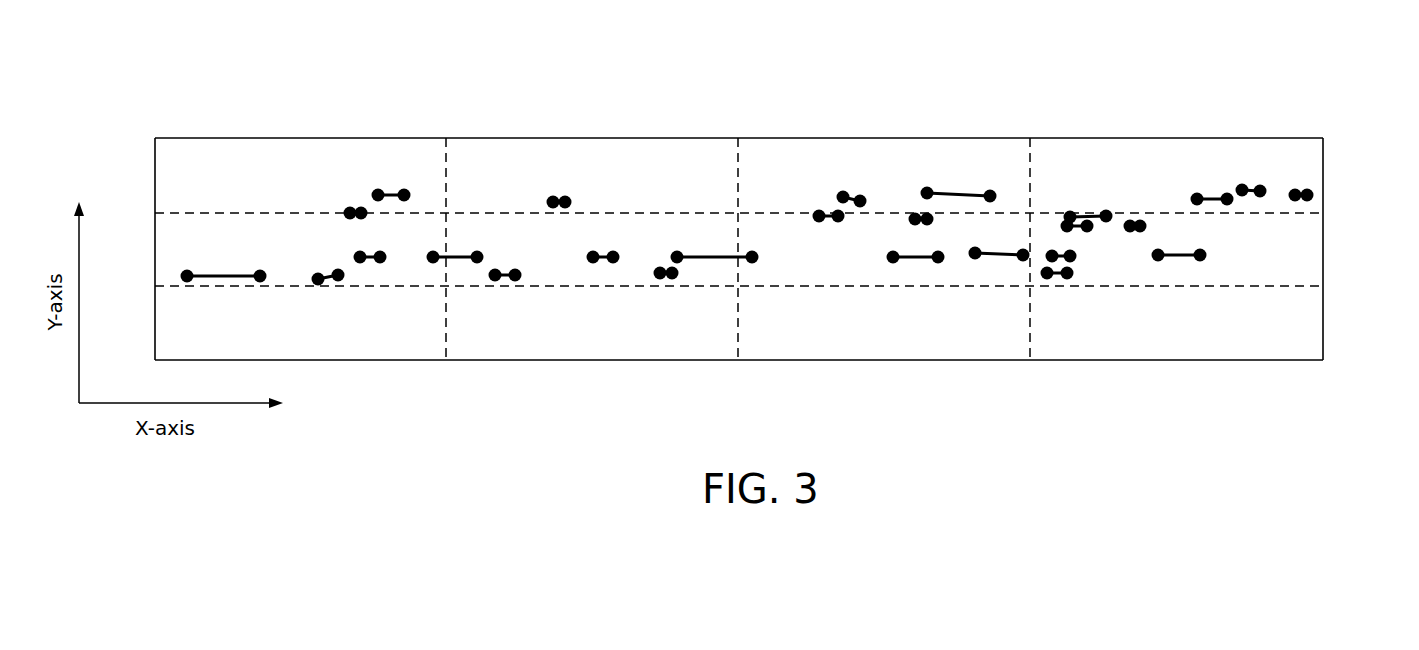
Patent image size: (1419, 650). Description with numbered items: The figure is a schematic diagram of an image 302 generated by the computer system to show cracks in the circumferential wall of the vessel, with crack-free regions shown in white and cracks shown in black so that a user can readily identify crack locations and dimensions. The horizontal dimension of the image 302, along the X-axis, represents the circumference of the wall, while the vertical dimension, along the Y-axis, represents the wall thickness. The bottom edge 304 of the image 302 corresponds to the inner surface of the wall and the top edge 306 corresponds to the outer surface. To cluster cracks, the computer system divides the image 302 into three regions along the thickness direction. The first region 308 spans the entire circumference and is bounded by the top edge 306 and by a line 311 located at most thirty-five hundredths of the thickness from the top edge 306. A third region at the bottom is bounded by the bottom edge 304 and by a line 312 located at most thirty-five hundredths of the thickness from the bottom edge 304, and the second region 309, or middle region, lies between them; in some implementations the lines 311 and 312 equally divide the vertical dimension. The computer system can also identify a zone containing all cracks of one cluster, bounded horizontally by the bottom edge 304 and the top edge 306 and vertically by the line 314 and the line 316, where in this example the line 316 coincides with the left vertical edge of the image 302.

The image 302 is at (690, 234).
The bottom edge 304 is at (1183, 362).
The top edge 306 is at (1170, 138).
The first region 308 is at (392, 172).
The second region 309 is at (1245, 287).
The line 311 is at (630, 213).
The line 312 is at (592, 287).
The line 314 is at (446, 187).
The line 316 is at (155, 177).